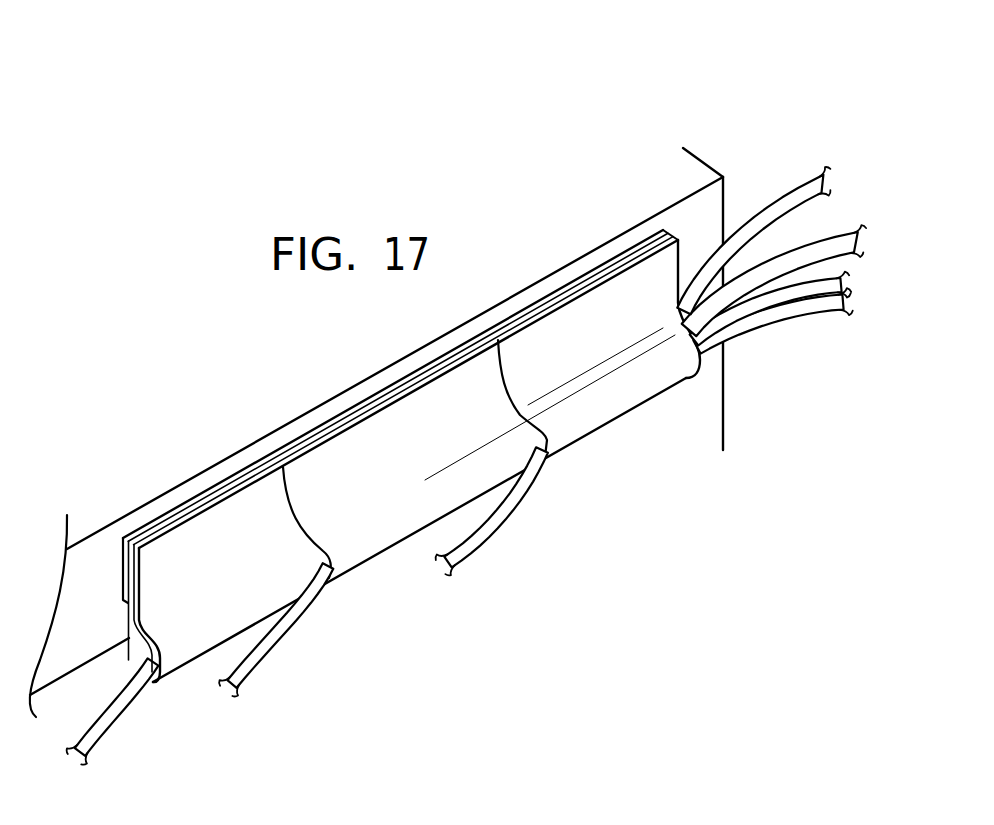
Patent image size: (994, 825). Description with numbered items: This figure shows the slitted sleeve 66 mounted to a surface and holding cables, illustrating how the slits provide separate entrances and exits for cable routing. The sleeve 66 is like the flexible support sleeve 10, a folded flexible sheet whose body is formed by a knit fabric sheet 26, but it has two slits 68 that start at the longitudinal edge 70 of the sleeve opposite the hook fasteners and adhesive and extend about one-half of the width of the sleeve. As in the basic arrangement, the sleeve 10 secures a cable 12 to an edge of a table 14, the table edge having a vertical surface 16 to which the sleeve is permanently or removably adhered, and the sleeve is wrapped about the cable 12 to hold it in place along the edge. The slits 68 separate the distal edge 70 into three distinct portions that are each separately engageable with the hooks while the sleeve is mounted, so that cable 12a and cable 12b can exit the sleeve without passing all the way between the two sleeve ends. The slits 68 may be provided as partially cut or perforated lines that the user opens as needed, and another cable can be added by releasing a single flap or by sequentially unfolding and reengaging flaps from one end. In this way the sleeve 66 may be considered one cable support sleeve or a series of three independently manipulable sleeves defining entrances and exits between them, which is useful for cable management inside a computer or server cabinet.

The flexible support sleeve 10 is at (633, 410).
The cable 12 is at (772, 315).
The cable 12a is at (822, 237).
The cable 12b is at (270, 658).
The table 14 is at (193, 421).
The vertical surface 16 is at (230, 577).
The knit fabric sheet 26 is at (778, 198).
The sleeve 66 is at (502, 249).
The slits 68 is at (333, 558).
The longitudinal edge 70 is at (343, 410).